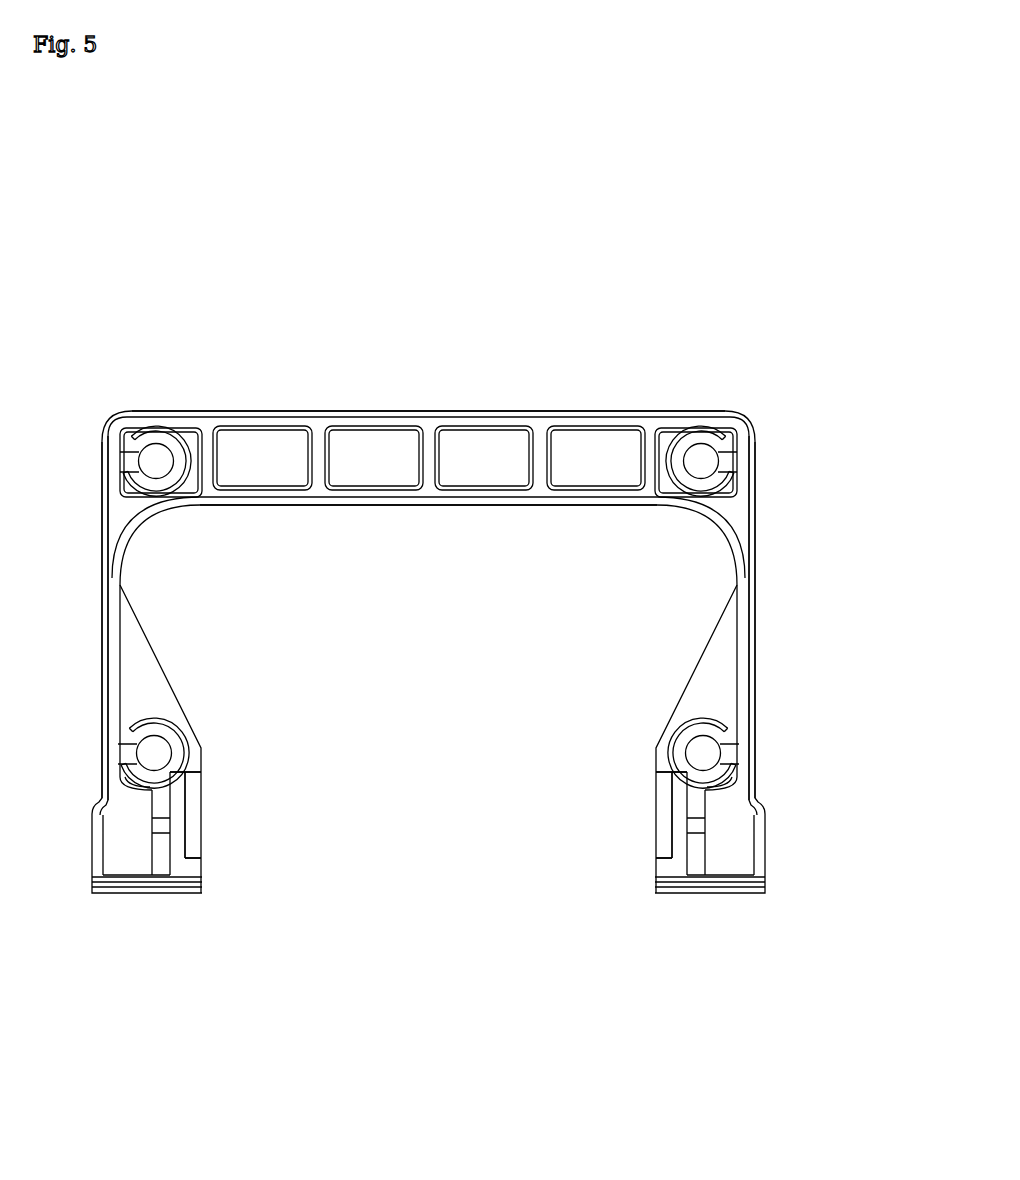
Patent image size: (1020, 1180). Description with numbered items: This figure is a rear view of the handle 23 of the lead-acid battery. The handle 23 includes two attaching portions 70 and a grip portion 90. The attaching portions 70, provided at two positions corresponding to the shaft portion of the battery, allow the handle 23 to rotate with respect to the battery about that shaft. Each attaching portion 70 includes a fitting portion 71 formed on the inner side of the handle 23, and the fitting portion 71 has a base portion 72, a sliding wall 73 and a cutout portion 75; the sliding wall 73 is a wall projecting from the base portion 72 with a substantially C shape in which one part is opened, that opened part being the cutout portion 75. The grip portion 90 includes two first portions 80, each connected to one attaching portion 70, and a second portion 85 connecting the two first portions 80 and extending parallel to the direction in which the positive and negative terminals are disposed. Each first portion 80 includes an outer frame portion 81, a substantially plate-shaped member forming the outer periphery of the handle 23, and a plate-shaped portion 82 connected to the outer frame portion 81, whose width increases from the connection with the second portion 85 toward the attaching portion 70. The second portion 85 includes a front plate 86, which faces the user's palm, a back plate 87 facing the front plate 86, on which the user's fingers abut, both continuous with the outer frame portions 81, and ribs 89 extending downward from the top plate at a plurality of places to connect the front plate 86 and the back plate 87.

The handle 23 is at (579, 291).
The grip portion 90 is at (862, 315).
The second portion 85 is at (551, 398).
The front plate 86 is at (385, 411).
The back plate 87 is at (386, 506).
The ribs 89 is at (437, 460).
The first portion 80 is at (159, 630).
The outer frame portion 81 is at (101, 650).
The plate-shaped portion 82 is at (167, 675).
The attaching portion 70 is at (153, 907).
The fitting portion 71 is at (203, 878).
The base portion 72 is at (186, 805).
The sliding wall 73 is at (192, 835).
The cutout portion 75 is at (195, 788).